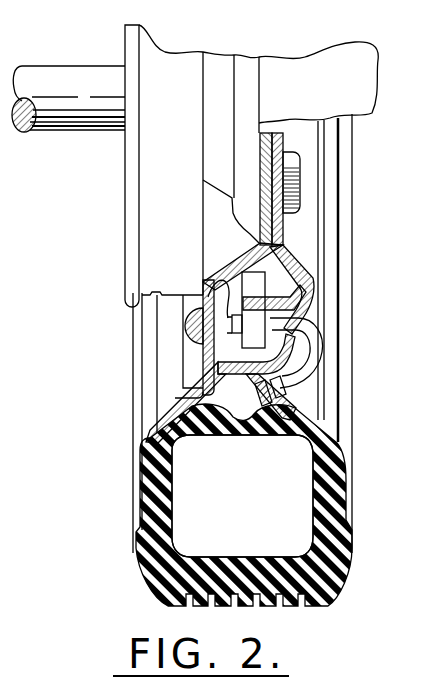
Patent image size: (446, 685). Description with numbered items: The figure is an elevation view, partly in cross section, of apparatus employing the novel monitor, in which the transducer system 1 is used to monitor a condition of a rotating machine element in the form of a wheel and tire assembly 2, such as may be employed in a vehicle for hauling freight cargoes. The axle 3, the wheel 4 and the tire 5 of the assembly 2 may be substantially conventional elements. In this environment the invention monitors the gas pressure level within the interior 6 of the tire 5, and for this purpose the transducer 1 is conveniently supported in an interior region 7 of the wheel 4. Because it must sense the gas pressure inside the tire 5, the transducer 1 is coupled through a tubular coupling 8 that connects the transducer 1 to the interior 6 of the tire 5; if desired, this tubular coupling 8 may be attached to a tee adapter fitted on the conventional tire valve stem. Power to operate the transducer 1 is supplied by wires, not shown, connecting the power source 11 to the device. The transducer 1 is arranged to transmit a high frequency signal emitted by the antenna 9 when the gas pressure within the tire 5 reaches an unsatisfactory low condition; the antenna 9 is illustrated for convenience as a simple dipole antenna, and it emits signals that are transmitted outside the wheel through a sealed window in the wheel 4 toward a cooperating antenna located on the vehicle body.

The transducer system 1 is at (258, 316).
The wheel and tire assembly 2 is at (359, 161).
The axle 3 is at (75, 133).
The wheel 4 is at (160, 362).
The tire 5 is at (147, 467).
The interior 6 is at (247, 500).
The interior region 7 is at (266, 263).
The tubular coupling 8 is at (318, 377).
The antenna 9 is at (208, 270).
The power source 11 is at (278, 270).